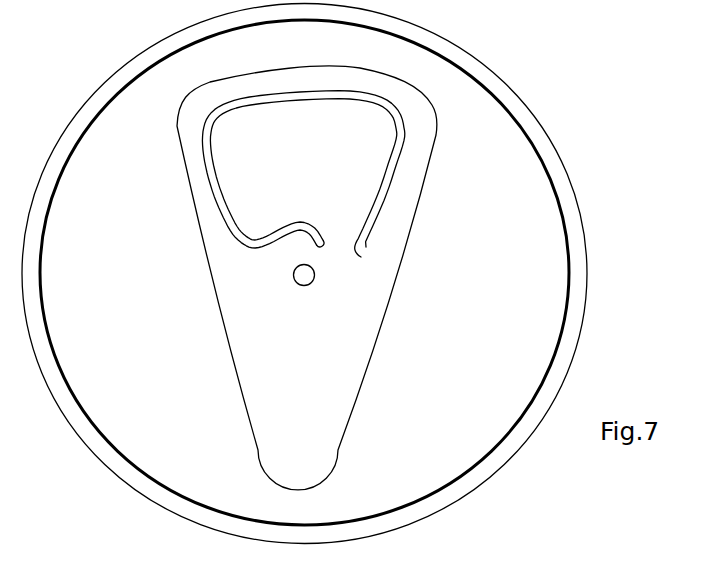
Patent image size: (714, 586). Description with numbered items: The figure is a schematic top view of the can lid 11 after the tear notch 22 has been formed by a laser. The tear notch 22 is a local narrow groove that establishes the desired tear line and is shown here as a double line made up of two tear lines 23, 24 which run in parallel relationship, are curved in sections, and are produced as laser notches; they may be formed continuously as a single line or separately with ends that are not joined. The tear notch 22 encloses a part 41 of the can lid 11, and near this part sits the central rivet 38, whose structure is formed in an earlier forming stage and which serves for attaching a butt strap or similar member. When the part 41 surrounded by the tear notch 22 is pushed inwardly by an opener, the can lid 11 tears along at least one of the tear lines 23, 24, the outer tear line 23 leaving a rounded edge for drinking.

The can lid 11 is at (527, 73).
The tear notch 22 is at (328, 157).
The tear line 23 is at (387, 183).
The tear line 24 is at (382, 173).
The central rivet 38 is at (326, 290).
The part of the can lid surrounded by the tear notch 41 is at (309, 141).